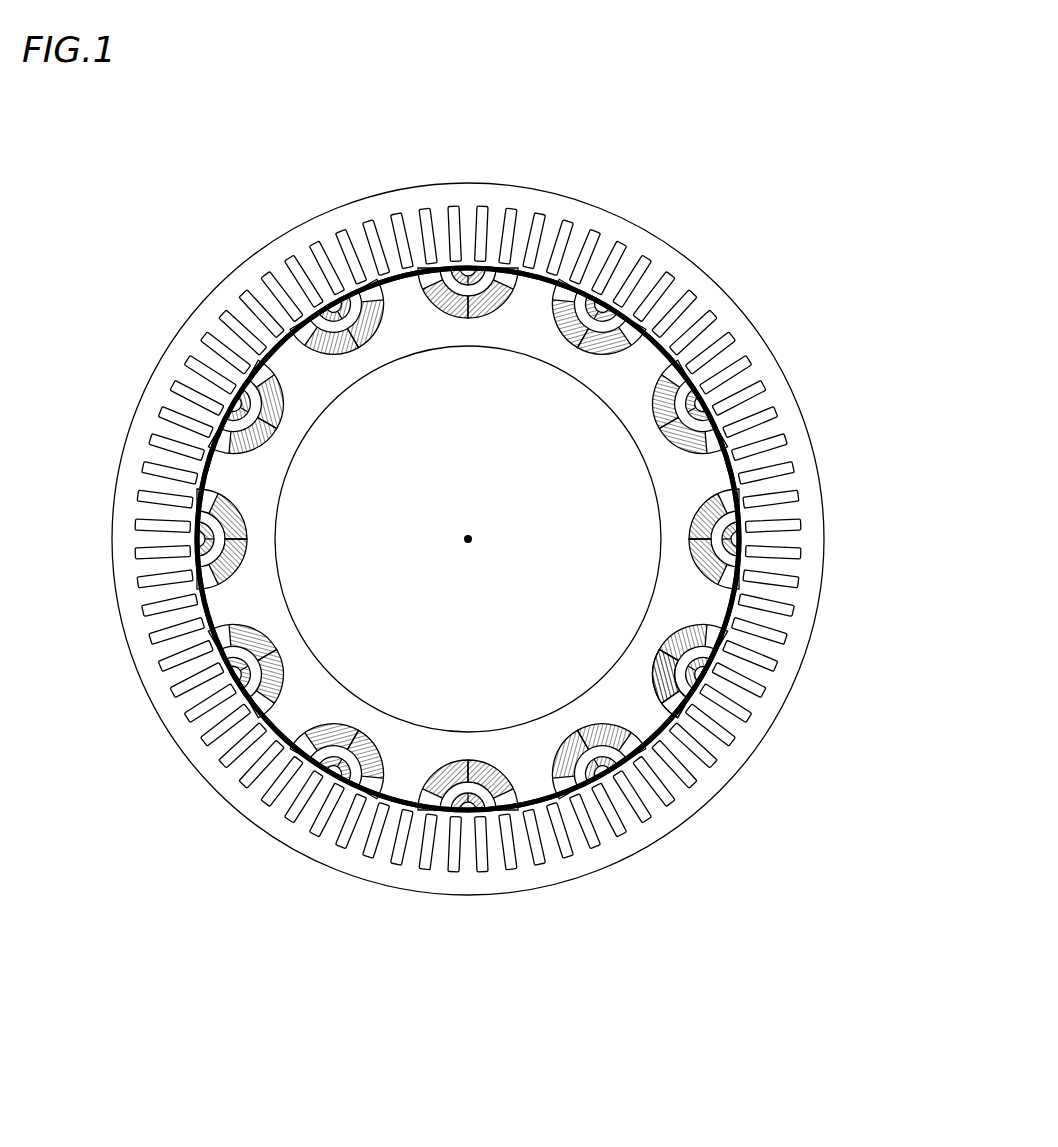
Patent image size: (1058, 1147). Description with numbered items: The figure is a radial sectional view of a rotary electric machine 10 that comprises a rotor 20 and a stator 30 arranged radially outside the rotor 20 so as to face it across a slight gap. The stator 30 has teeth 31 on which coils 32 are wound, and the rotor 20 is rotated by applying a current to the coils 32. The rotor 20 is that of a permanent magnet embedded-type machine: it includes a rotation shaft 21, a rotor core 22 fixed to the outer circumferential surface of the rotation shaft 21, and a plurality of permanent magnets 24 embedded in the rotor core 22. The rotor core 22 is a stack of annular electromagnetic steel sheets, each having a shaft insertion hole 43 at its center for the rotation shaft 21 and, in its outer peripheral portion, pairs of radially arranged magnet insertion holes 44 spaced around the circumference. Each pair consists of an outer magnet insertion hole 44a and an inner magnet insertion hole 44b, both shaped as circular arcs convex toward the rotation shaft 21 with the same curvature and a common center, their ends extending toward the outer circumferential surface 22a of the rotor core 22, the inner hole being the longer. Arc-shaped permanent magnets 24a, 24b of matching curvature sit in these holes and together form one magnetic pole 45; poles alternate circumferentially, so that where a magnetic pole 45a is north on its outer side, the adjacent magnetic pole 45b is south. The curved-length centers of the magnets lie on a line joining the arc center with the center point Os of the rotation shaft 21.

The rotary electric machine 10 is at (627, 186).
The rotor 20 is at (713, 312).
The rotation shaft 21 is at (370, 673).
The rotor core 22 is at (693, 610).
The outer circumferential surface of the rotor core 22a is at (705, 675).
The permanent magnets 24 is at (564, 539).
The permanent magnet 24a is at (708, 578).
The permanent magnet 24b is at (712, 512).
The stator 30 is at (772, 340).
The teeth 31 is at (792, 423).
The coils 32 is at (777, 400).
The shaft insertion hole 43 is at (303, 640).
The magnet insertion holes 44 is at (248, 772).
The magnet insertion hole 44a is at (300, 718).
The magnet insertion hole 44b is at (318, 757).
The magnetic pole 45 is at (137, 438).
The magnetic pole 45a is at (238, 400).
The magnetic pole 45b is at (197, 538).
The center point of the rotation shaft Os is at (470, 533).